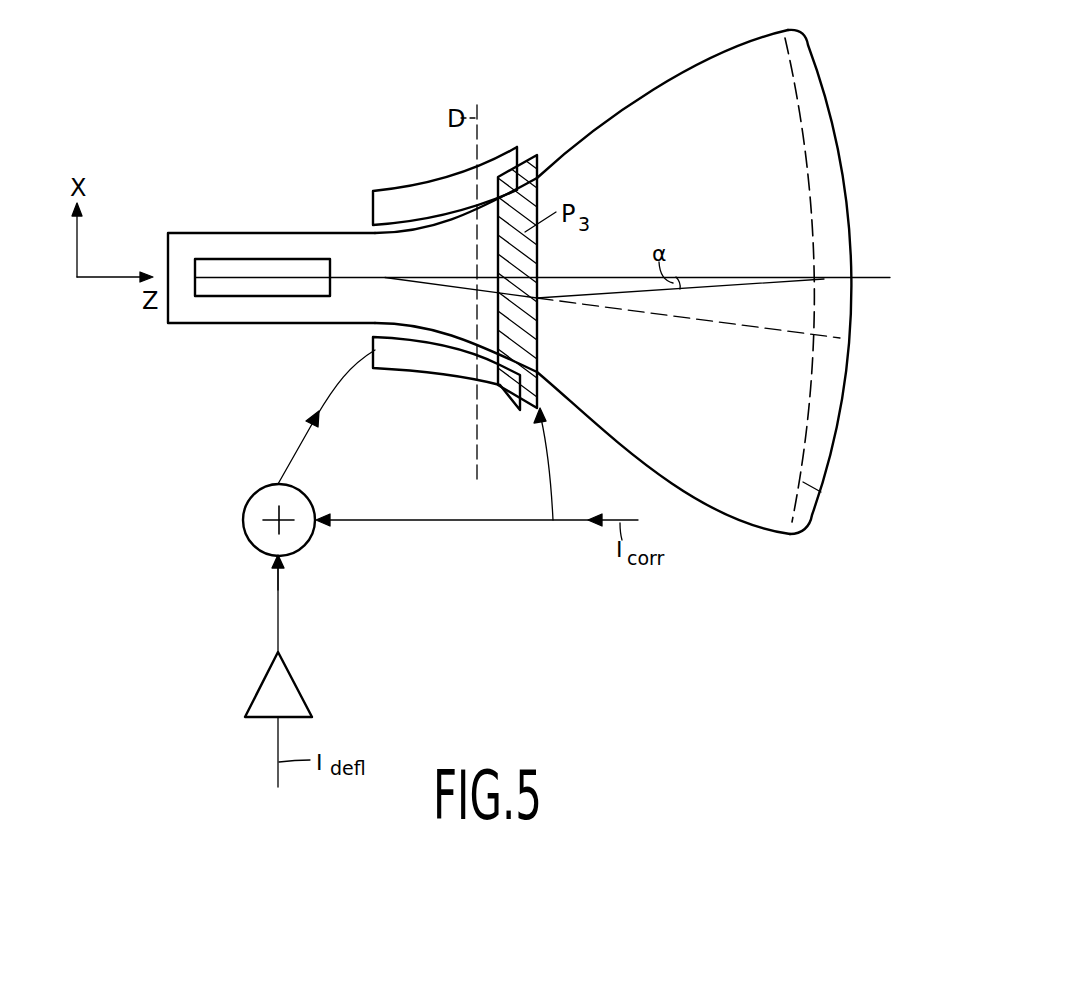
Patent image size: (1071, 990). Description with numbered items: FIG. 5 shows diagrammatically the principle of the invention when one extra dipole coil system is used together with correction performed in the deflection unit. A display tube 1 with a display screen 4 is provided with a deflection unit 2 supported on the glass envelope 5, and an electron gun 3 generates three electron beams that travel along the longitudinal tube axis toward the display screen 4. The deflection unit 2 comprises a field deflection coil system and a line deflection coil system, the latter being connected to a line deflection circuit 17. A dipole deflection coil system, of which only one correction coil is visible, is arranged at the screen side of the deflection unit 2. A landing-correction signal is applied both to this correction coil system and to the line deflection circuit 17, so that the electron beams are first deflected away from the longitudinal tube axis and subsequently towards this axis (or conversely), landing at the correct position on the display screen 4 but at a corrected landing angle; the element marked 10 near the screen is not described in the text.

The display tube 1 is at (522, 337).
The deflection unit 2 is at (402, 196).
The electron gun 3 is at (233, 288).
The display screen 4 is at (822, 76).
The glass envelope 5 is at (672, 66).
The phosphor layer 10 is at (829, 503).
The line deflection circuit 17 is at (298, 548).